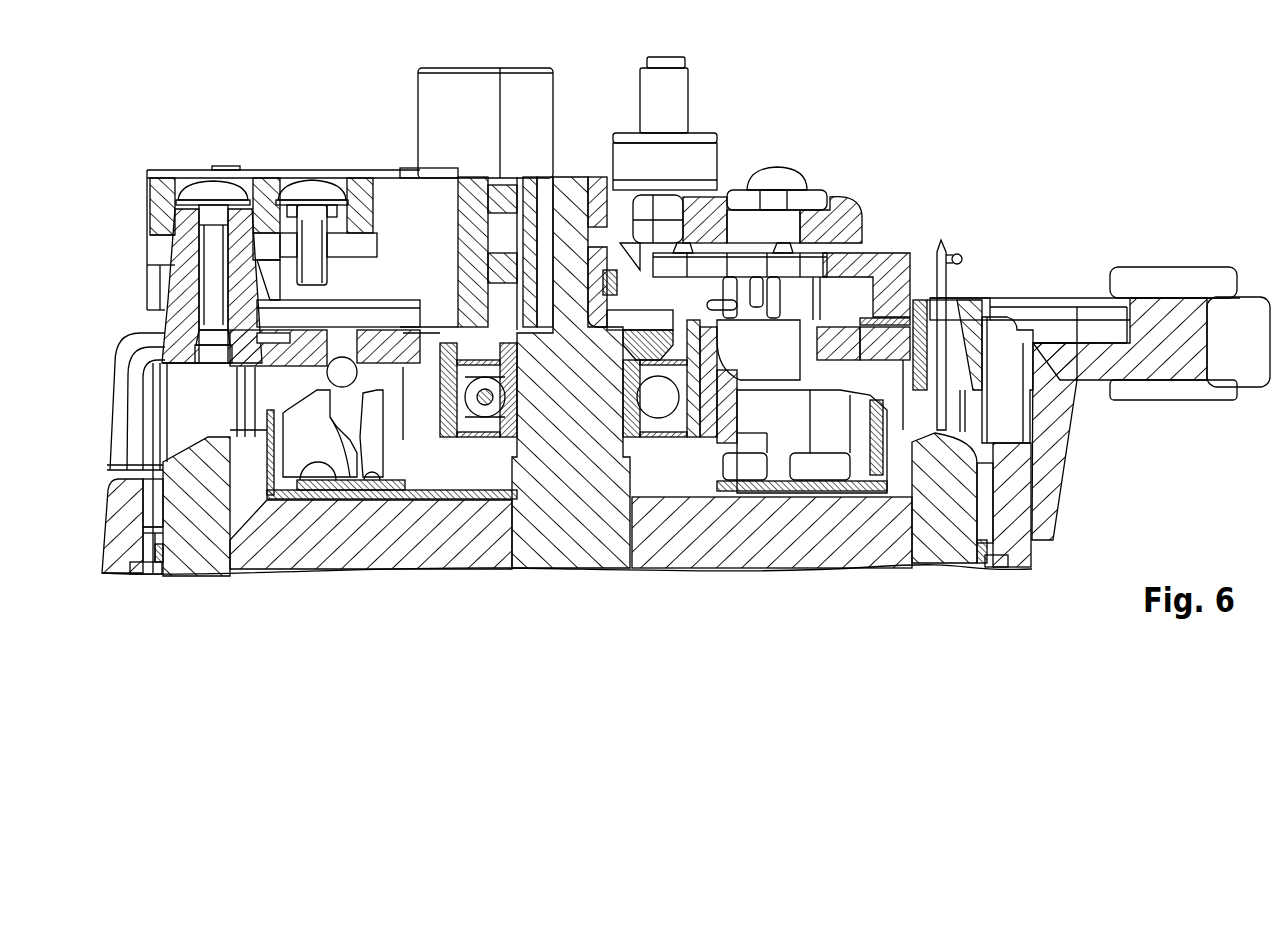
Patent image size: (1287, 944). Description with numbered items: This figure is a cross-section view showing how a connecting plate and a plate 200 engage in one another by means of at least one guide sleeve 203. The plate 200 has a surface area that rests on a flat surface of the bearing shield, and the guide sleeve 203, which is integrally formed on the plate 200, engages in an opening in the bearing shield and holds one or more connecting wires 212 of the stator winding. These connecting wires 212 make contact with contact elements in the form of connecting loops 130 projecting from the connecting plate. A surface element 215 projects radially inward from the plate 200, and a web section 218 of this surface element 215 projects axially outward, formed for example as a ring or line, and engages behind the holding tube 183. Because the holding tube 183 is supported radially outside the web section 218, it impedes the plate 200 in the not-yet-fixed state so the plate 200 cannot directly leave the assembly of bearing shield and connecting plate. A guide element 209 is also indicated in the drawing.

The connecting loops 130 is at (957, 253).
The holding tube 183 is at (890, 283).
The plate 200 is at (927, 348).
The guide sleeve 203 is at (988, 318).
The guide element 209 is at (985, 275).
The connecting wires 212 is at (939, 242).
The surface element 215 is at (872, 461).
The web section 218 is at (853, 237).